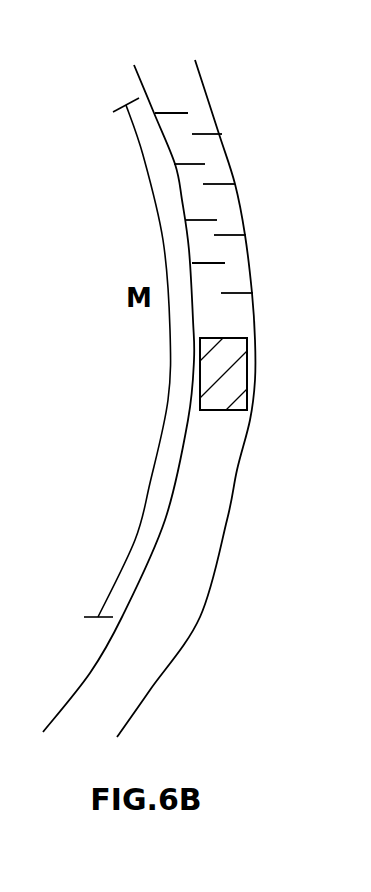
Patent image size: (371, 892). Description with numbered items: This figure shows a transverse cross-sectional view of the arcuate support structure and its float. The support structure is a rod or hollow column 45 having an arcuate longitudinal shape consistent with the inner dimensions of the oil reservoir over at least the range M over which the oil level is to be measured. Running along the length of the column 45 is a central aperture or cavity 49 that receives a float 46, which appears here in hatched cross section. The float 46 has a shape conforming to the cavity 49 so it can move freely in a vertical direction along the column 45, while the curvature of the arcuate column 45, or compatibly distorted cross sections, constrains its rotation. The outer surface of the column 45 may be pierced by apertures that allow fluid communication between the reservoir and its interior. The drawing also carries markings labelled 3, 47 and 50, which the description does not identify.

The measuring tape blade 3 is at (223, 185).
The hollow column 45 is at (250, 257).
The graduation marks 47 is at (232, 184).
The float 46 is at (232, 373).
The inner surface 50 is at (207, 472).
The cavity 49 is at (152, 578).